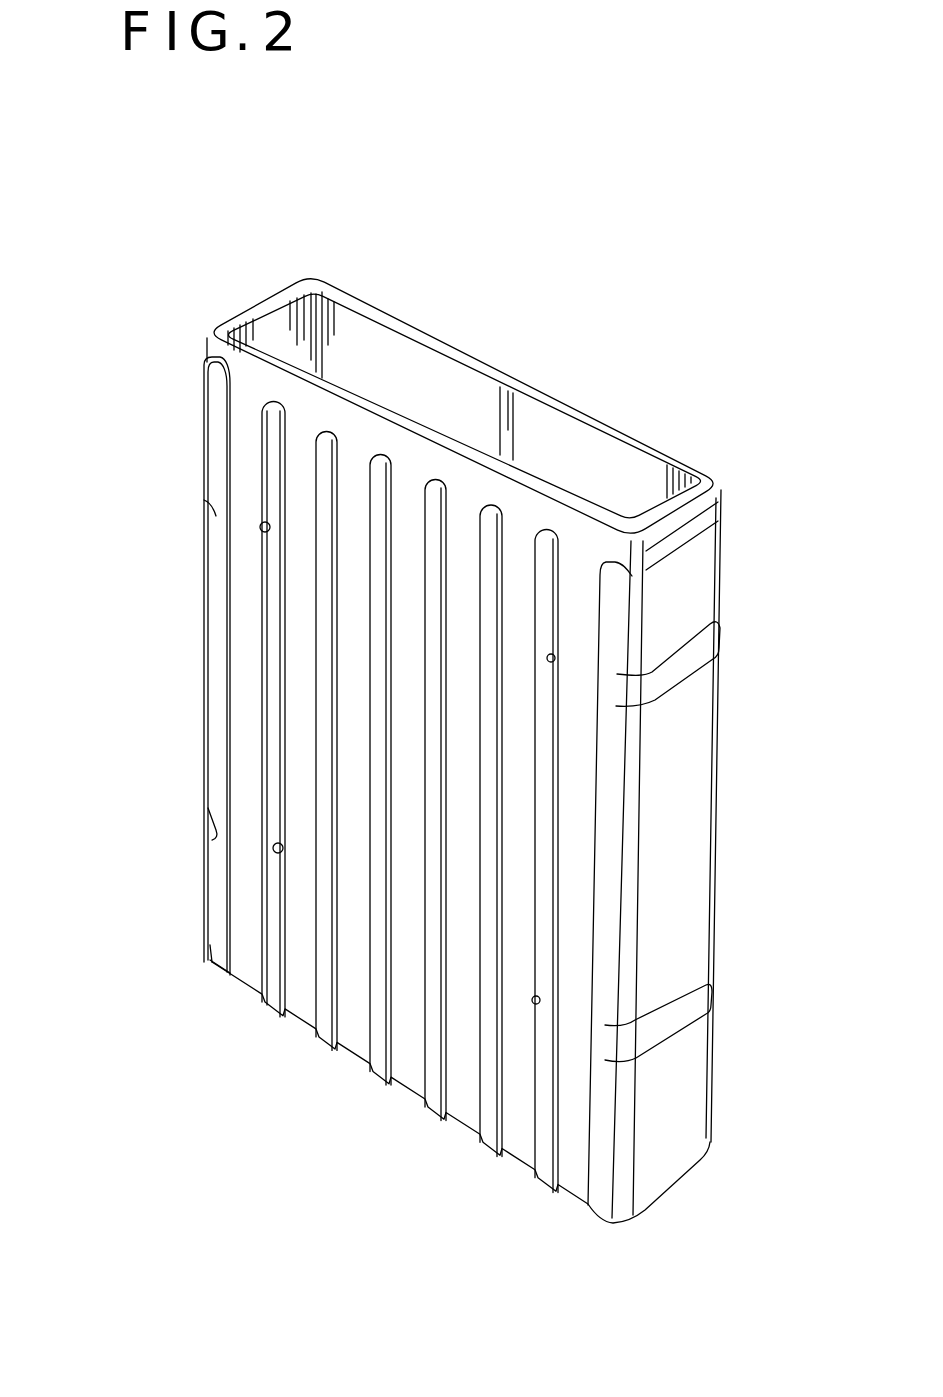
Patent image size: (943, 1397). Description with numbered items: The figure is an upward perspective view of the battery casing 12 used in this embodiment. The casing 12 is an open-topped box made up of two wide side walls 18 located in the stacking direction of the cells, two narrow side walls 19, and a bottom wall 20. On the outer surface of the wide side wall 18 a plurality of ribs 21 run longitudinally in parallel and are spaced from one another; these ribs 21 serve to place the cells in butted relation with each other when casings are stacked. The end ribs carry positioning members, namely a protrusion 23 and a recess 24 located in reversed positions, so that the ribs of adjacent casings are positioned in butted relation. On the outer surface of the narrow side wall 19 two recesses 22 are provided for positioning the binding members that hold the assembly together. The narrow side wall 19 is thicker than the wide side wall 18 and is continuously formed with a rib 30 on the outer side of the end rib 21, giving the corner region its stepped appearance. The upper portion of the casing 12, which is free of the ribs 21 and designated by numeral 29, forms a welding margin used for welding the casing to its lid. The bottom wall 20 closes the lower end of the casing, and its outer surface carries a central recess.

The battery casing 12 is at (165, 407).
The wide side wall 18 is at (587, 413).
The narrow side wall 19 is at (233, 315).
The bottom wall 20 is at (410, 1090).
The rib 21 is at (273, 685).
The recess 22 is at (681, 658).
The protrusion 23 is at (260, 524).
The recess 24 is at (273, 850).
The welding margin 29 is at (360, 435).
The rib 30 is at (212, 962).